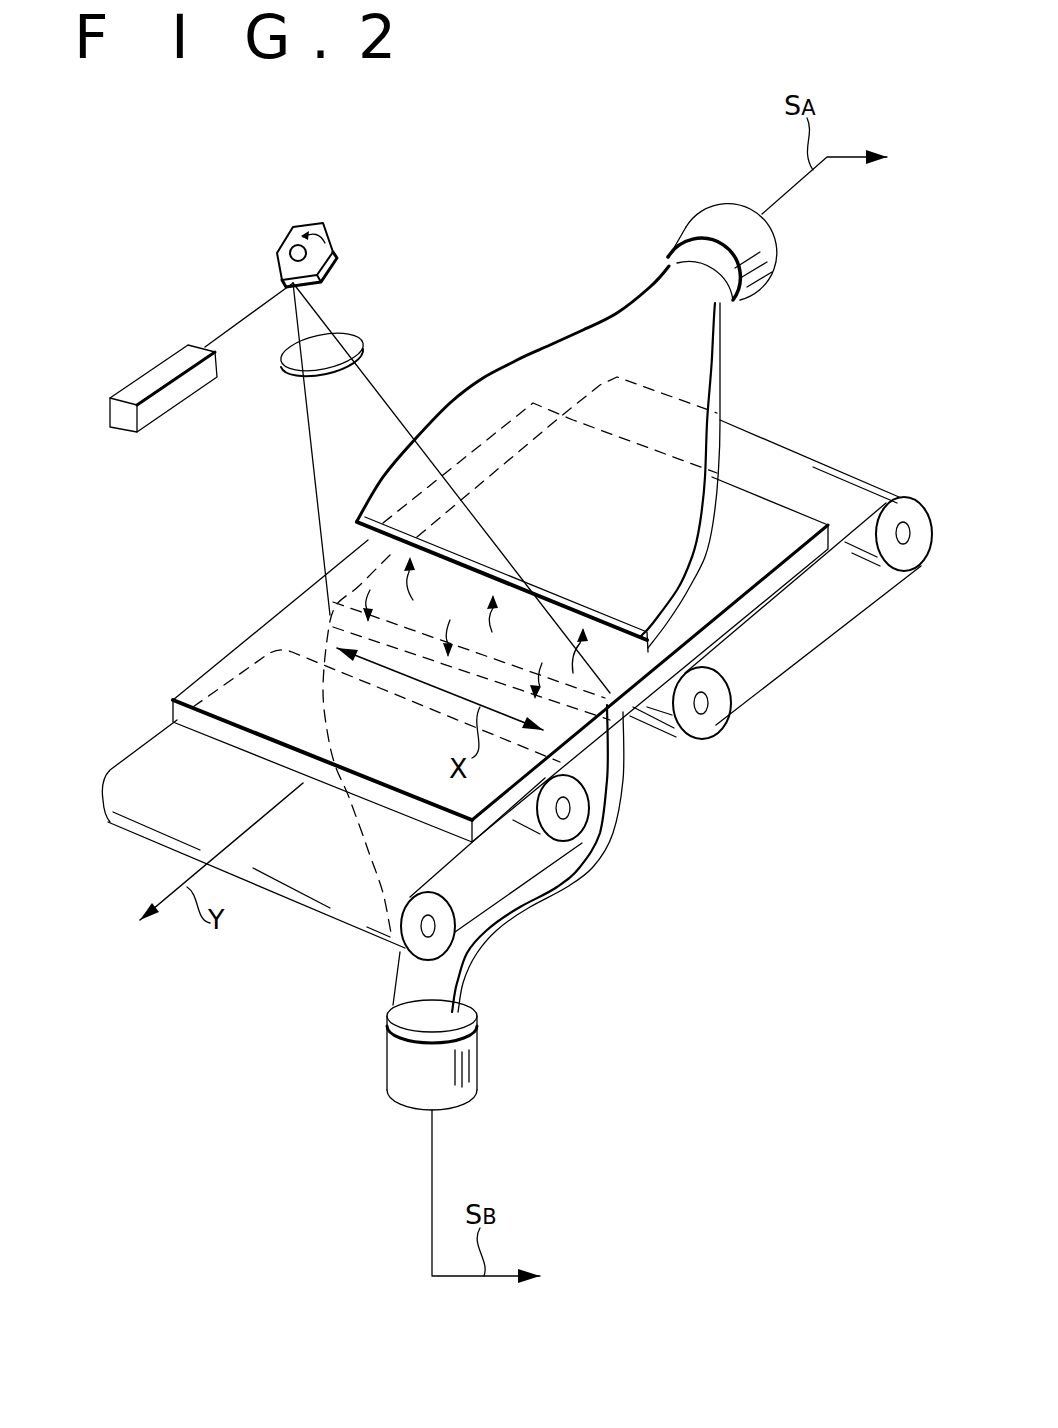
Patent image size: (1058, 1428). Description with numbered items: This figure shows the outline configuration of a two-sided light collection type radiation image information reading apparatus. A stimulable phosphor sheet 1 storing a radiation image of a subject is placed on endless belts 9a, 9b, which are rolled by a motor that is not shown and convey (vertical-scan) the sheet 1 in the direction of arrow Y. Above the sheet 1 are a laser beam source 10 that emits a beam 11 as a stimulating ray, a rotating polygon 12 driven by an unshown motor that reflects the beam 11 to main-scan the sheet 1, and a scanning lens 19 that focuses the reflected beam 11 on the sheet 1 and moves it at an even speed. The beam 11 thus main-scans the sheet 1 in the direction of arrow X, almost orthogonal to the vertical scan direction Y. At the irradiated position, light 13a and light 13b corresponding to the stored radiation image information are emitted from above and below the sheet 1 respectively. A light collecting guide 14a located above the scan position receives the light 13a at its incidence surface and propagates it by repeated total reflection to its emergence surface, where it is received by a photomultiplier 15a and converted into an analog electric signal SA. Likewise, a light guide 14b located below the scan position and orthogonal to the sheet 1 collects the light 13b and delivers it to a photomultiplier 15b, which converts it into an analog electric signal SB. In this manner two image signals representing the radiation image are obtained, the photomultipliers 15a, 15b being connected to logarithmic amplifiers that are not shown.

The stimulable phosphor sheet 1 is at (275, 617).
The endless belt 9a is at (810, 653).
The endless belt 9b is at (133, 753).
The laser beam source 10 is at (190, 343).
The beam 11 is at (403, 413).
The rotating polygon 12 is at (330, 232).
The light 13a is at (413, 590).
The light 13b is at (542, 663).
The light collecting guide 14a is at (567, 340).
The light guide 14b is at (613, 833).
The photomultiplier 15a is at (693, 223).
The photomultiplier 15b is at (478, 1082).
The scanning lens 19 is at (280, 360).